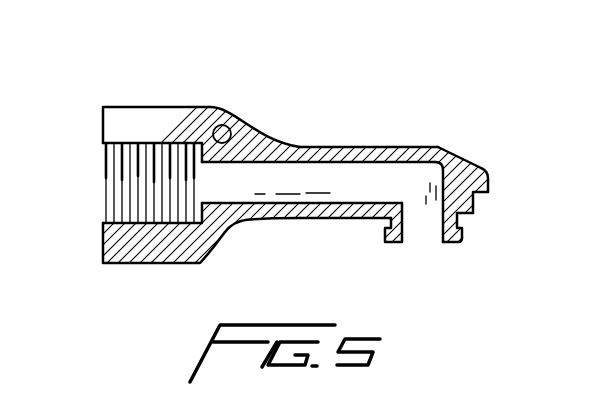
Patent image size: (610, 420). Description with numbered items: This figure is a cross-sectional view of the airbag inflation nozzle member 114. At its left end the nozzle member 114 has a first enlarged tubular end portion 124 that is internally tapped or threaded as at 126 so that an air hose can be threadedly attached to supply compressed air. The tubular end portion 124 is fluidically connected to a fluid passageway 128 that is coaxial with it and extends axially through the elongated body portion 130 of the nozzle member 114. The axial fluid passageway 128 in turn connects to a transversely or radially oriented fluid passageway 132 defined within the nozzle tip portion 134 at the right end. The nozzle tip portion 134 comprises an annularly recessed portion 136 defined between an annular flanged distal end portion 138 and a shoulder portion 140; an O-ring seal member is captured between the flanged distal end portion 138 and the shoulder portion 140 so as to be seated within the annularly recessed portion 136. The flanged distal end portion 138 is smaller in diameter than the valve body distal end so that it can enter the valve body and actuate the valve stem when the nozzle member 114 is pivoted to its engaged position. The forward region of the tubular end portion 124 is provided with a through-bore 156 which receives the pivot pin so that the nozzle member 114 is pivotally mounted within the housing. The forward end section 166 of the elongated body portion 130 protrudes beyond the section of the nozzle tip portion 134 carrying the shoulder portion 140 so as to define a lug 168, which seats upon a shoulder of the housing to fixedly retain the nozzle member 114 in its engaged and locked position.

The airbag inflation nozzle member 114 is at (270, 138).
The first enlarged tubular end portion 124 is at (157, 107).
The internal threads 126 is at (110, 183).
The fluid passageway 128 is at (370, 178).
The elongated body portion 130 is at (322, 147).
The transversely oriented fluid passageway 132 is at (422, 223).
The nozzle tip portion 134 is at (403, 243).
The annularly recessed portion 136 is at (383, 224).
The annular flanged distal end portion 138 is at (462, 242).
The shoulder portion 140 is at (465, 224).
The through-bore 156 is at (228, 126).
The forward end section 166 is at (470, 160).
The lug 168 is at (488, 178).